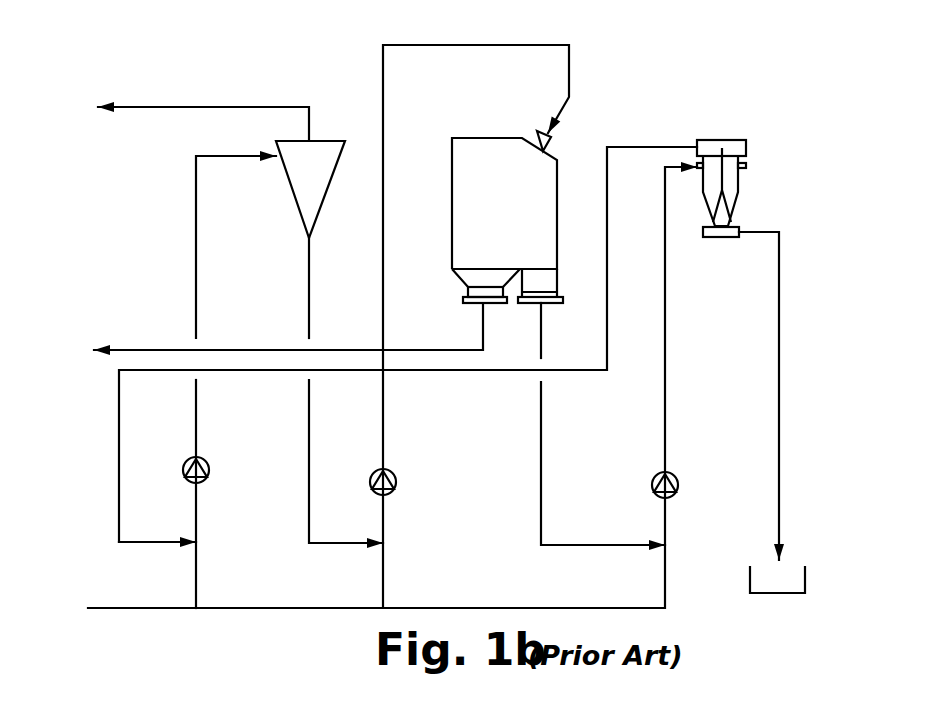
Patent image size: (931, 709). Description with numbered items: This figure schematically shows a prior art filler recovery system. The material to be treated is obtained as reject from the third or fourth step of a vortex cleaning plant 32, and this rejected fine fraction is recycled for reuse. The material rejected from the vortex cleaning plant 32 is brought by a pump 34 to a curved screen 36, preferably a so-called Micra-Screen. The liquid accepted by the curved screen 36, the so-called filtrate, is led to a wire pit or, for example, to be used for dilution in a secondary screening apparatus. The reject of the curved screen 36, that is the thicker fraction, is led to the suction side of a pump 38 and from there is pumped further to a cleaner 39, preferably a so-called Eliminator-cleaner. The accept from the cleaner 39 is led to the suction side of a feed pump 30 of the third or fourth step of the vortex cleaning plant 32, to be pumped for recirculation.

The feed pump 30 is at (209, 470).
The vortex cleaning plant 32 is at (300, 193).
The pump 34 is at (396, 482).
The curved screen 36 is at (477, 153).
The pump 38 is at (678, 485).
The cleaner 39 is at (730, 180).